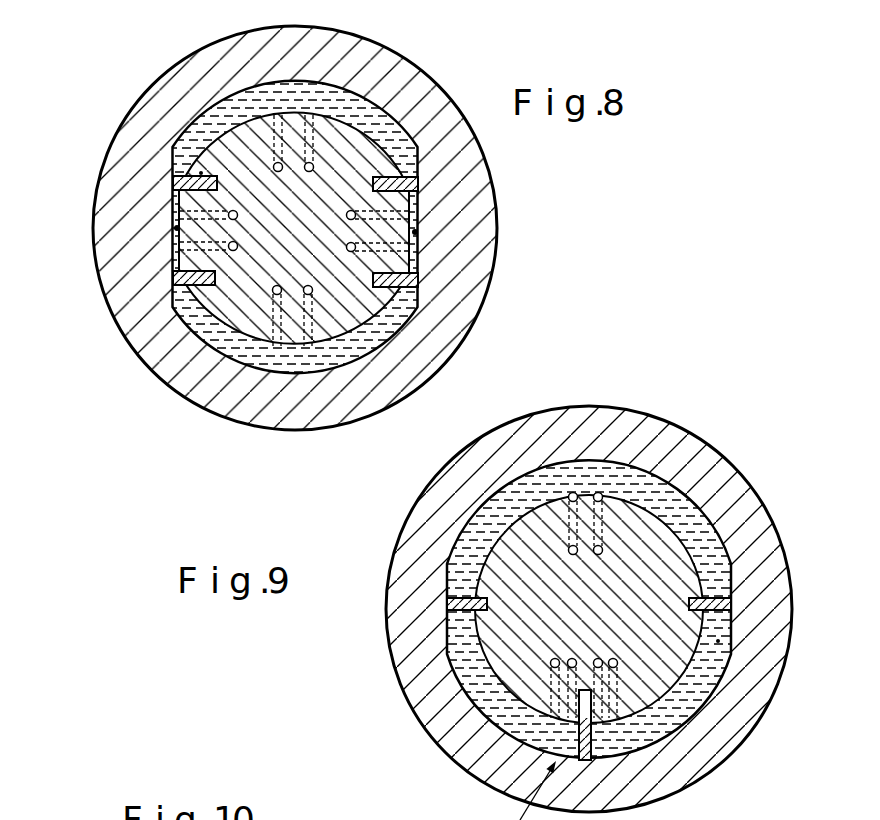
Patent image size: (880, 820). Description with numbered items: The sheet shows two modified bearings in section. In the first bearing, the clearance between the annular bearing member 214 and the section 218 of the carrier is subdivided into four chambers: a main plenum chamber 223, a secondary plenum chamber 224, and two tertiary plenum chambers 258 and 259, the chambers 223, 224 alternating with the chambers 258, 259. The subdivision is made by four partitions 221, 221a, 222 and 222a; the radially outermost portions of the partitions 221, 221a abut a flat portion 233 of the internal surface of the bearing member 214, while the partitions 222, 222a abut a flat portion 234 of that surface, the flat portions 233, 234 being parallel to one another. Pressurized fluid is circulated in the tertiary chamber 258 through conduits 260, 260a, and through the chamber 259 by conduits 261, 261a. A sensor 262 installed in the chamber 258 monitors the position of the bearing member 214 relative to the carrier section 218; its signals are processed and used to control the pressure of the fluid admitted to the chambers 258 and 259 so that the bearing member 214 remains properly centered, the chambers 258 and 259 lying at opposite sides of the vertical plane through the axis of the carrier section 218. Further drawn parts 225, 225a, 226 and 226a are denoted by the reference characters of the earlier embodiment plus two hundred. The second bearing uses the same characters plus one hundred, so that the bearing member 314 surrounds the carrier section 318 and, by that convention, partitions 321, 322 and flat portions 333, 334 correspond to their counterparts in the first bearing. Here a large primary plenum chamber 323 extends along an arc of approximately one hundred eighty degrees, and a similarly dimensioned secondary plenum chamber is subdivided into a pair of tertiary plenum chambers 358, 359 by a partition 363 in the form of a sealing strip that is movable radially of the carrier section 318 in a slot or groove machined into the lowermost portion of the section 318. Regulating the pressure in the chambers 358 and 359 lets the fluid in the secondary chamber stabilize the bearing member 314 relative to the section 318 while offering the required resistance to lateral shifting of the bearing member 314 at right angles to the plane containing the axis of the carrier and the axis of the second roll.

In FIG. 8, the bearing member 214 is at (468, 210).
In FIG. 8, the carrier section 218 is at (200, 363).
In FIG. 8, the partition 221 is at (173, 154).
In FIG. 8, the partition 221a is at (173, 283).
In FIG. 8, the partition 222 is at (417, 188).
In FIG. 8, the partition 222a is at (418, 283).
In FIG. 8, the main plenum chamber 223 is at (327, 97).
In FIG. 8, the secondary plenum chamber 224 is at (292, 360).
In FIG. 8, the fluid chamber 225 is at (200, 170).
In FIG. 8, the fluid chamber wall 225a is at (392, 55).
In FIG. 8, the fluid passage 226 is at (276, 294).
In FIG. 8, the fluid passage 226a is at (309, 294).
In FIG. 8, the flat portion 233 is at (229, 215).
In FIG. 8, the flat portion 234 is at (417, 231).
In FIG. 8, the tertiary plenum chamber 258 is at (178, 201).
In FIG. 8, the tertiary plenum chamber 259 is at (418, 203).
In FIG. 8, the conduit 260 is at (201, 173).
In FIG. 8, the conduit 260a is at (229, 246).
In FIG. 8, the conduit 261 is at (418, 190).
In FIG. 8, the conduit 261a is at (410, 257).
In FIG. 8, the sensor 262 is at (174, 228).
In FIG. 9, the bearing member 314 is at (665, 438).
In FIG. 9, the carrier section 318 is at (441, 737).
In FIG. 9, the partition 321 is at (447, 612).
In FIG. 9, the partition 322 is at (729, 568).
In FIG. 9, the primary plenum chamber 323 is at (595, 468).
In FIG. 9, the flat portion 333 is at (449, 578).
In FIG. 9, the flat portion 334 is at (718, 641).
In FIG. 9, the tertiary plenum chamber 358 is at (458, 647).
In FIG. 9, the tertiary plenum chamber 359 is at (697, 695).
In FIG. 9, the partition 363 is at (592, 752).